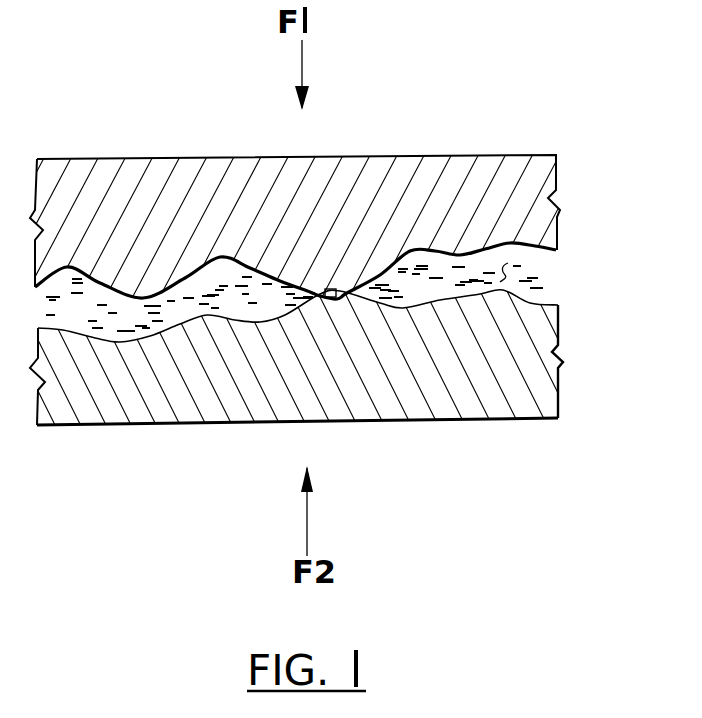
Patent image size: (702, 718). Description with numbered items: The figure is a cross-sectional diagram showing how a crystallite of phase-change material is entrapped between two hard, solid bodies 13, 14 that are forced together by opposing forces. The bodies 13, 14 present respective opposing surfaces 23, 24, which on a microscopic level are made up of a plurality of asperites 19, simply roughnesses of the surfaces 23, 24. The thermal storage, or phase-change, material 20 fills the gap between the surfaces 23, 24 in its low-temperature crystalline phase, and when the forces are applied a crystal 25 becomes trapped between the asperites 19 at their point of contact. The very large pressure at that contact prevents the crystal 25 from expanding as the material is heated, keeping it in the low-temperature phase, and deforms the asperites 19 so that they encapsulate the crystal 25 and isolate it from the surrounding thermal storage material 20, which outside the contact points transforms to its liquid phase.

The hard solid body 13 is at (557, 170).
The hard solid body 14 is at (560, 385).
The asperites 19 is at (314, 290).
The thermal storage (phase-change) material 20 is at (537, 270).
The opposing surface 23 is at (185, 280).
The opposing surface 24 is at (207, 316).
The crystal (crystallite) 25 is at (329, 288).